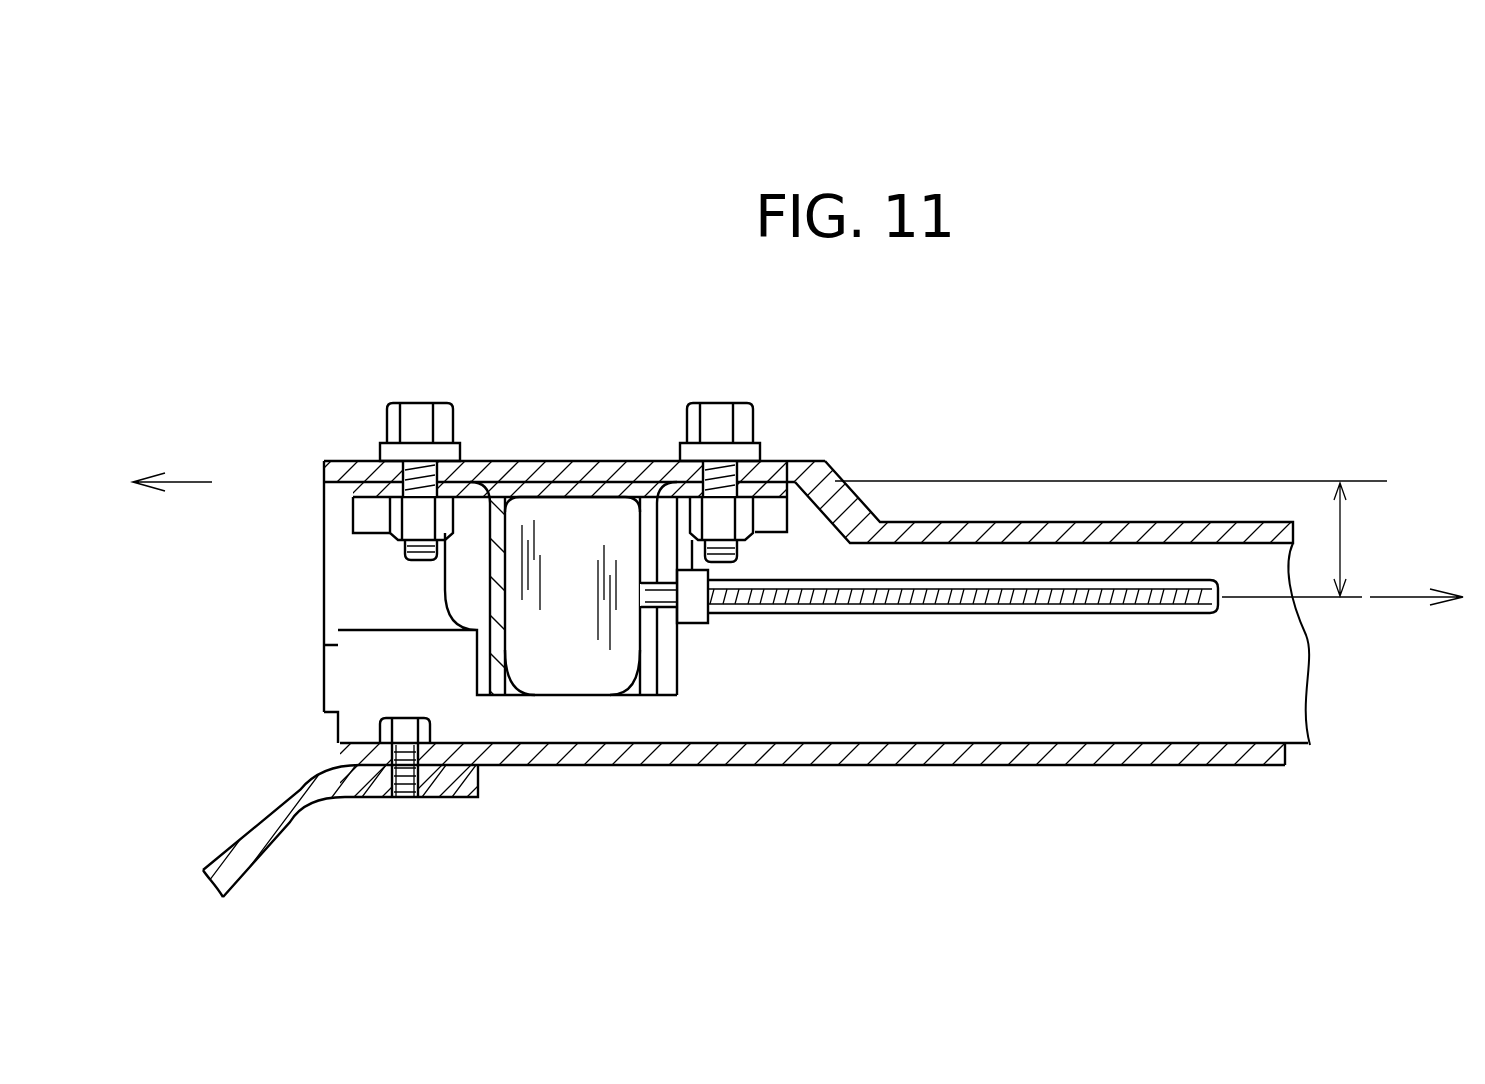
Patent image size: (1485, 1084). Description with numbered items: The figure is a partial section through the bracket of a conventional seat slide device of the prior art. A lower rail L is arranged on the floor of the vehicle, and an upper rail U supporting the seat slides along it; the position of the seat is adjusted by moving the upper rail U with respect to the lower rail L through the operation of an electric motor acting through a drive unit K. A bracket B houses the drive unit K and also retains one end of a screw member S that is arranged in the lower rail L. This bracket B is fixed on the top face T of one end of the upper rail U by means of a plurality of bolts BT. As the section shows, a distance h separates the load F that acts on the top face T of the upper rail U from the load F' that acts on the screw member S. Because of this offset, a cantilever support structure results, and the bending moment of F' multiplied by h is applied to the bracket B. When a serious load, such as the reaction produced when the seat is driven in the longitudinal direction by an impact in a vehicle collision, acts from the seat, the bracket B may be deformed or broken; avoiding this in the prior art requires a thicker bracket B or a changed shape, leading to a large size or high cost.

The bolts BT is at (420, 423).
The top face T is at (500, 461).
The drive unit K is at (607, 548).
The upper rail U is at (1163, 522).
The screw member S is at (1032, 608).
The lower rail L is at (902, 760).
The bracket B is at (503, 652).
The distance h is at (1347, 539).
The load F is at (183, 487).
The load F' is at (1416, 615).